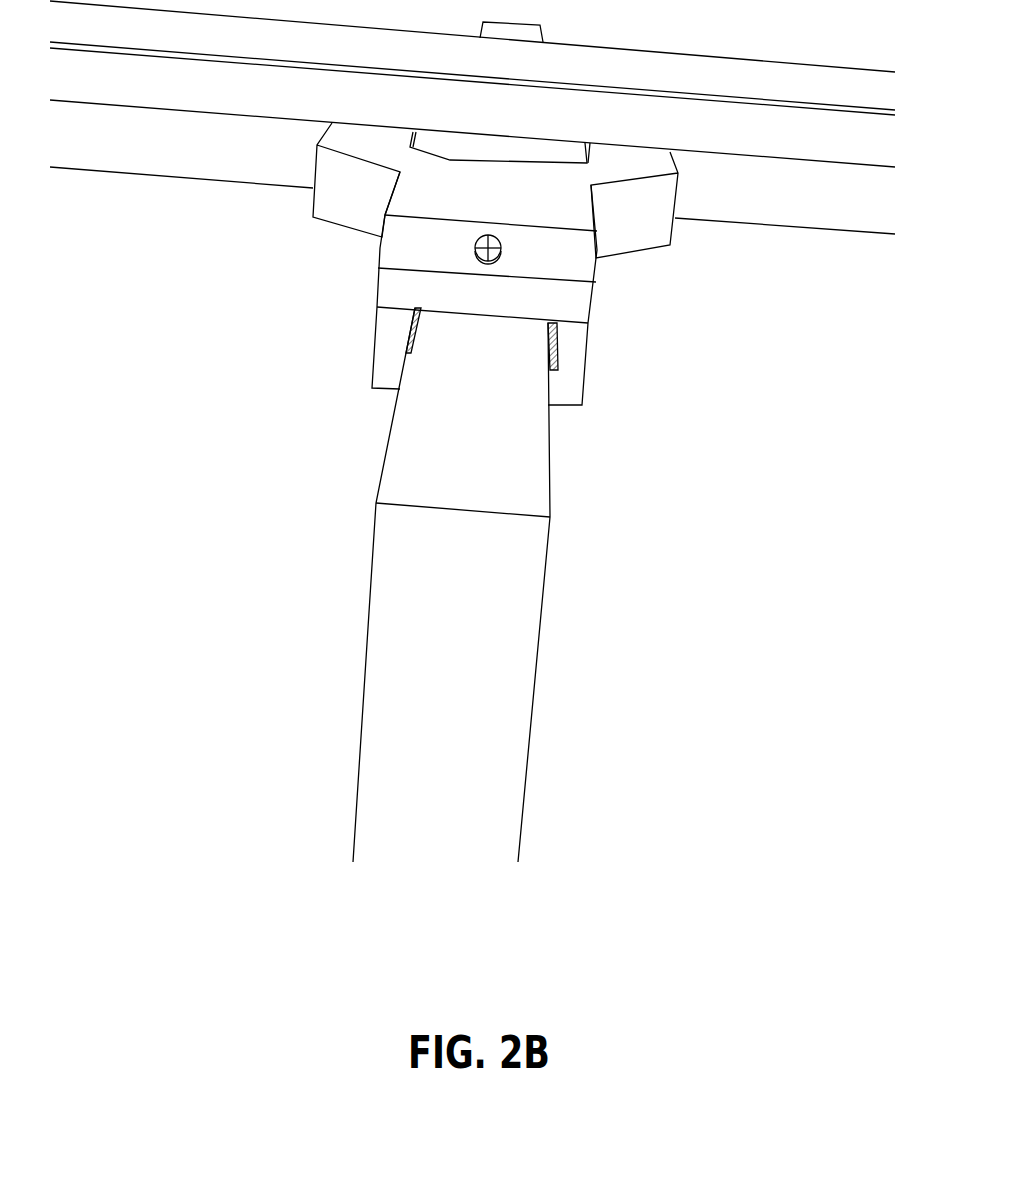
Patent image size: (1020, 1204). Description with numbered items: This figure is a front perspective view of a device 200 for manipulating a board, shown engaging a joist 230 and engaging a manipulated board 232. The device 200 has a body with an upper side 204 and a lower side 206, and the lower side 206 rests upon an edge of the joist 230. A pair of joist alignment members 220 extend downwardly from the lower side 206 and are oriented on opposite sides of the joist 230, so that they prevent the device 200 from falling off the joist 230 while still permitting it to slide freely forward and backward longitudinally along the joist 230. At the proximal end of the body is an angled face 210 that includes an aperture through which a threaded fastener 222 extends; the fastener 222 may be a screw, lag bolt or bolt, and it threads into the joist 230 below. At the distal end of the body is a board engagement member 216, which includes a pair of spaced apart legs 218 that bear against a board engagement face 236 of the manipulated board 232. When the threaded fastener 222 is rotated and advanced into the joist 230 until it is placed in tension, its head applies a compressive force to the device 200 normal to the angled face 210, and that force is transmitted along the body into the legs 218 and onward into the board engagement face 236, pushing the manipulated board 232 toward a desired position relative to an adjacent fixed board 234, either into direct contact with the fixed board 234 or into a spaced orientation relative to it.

The device 200 is at (287, 319).
The upper side 204 is at (520, 193).
The lower side 206 is at (528, 320).
The angled face 210 is at (557, 257).
The board engagement member 216 is at (676, 271).
The legs 218 is at (333, 181).
The joist alignment members 220 is at (380, 374).
The threaded fastener 222 is at (473, 245).
The joist 230 is at (497, 457).
The manipulated board 232 is at (790, 141).
The fixed board 234 is at (767, 91).
The board engagement face 236 is at (812, 215).